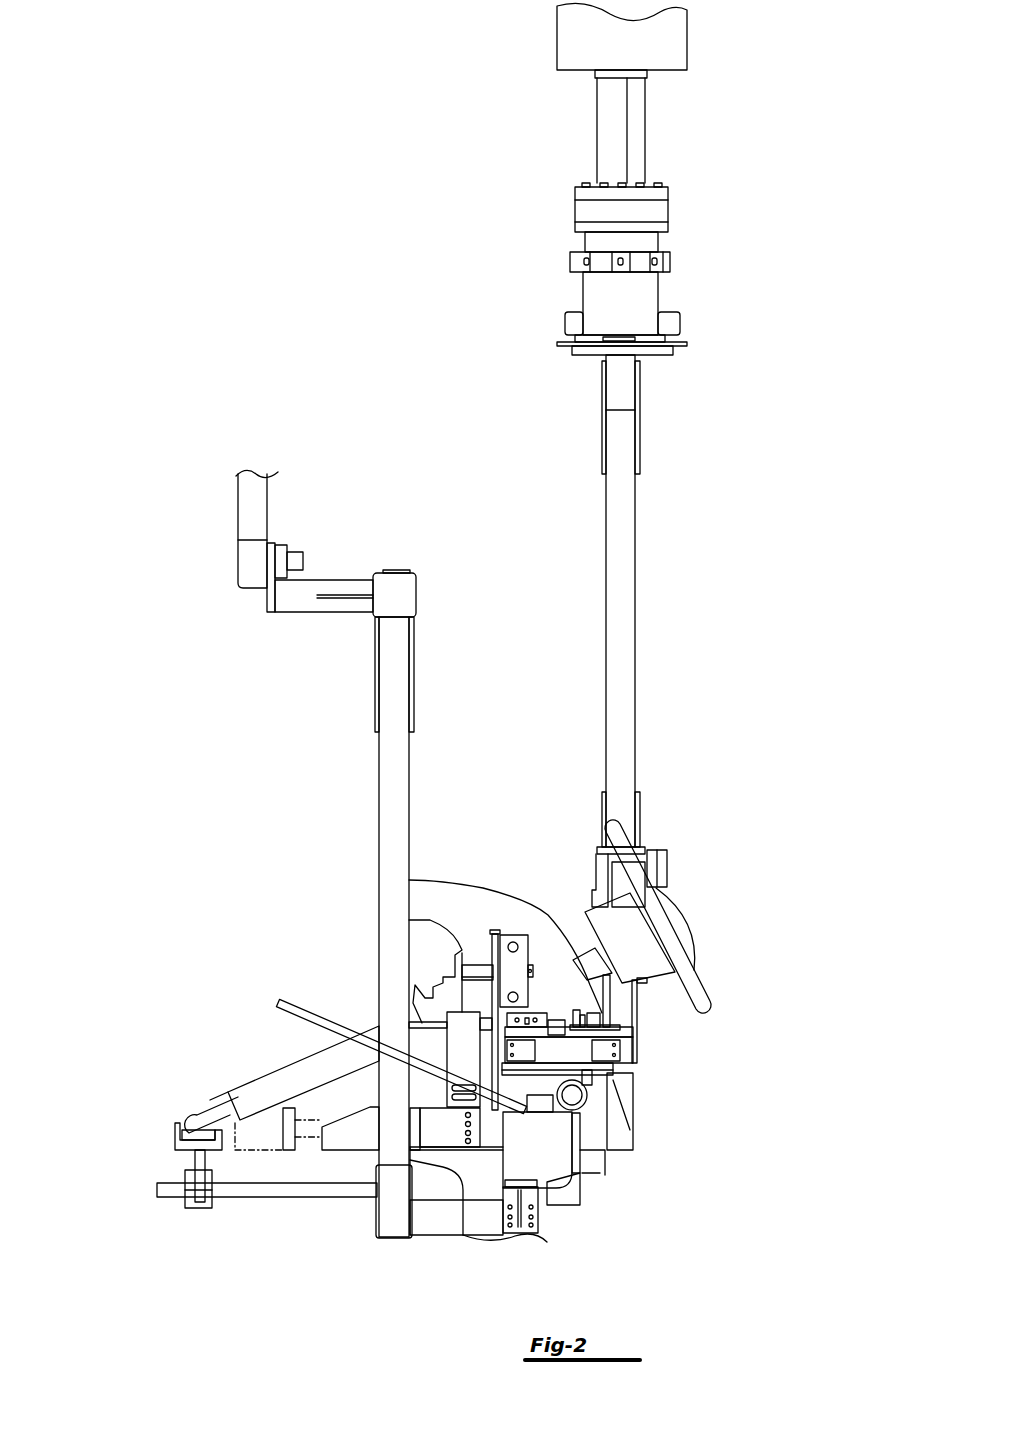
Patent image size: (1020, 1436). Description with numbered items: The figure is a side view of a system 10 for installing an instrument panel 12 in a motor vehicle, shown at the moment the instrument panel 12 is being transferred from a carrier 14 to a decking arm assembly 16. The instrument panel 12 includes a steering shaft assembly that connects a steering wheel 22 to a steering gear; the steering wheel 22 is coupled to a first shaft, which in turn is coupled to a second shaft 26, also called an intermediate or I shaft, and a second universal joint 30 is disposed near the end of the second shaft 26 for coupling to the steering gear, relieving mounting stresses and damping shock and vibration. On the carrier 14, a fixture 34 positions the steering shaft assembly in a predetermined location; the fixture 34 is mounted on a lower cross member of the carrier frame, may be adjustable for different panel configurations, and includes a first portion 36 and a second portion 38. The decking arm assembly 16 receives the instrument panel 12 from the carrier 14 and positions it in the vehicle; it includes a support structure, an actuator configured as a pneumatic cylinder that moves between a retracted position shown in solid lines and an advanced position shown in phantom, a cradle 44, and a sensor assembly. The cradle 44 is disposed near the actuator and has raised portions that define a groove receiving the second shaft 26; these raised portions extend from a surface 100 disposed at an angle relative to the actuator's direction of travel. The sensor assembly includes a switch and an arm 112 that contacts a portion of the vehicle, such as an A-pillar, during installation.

The system 10 is at (419, 812).
The instrument panel 12 is at (487, 893).
The carrier 14 is at (383, 772).
The decking arm assembly 16 is at (715, 252).
The steering wheel 22 is at (697, 990).
The second shaft 26 is at (262, 1082).
The second universal joint 30 is at (182, 1143).
The fixture 34 is at (235, 1202).
The first portion 36 is at (255, 1195).
The second portion 38 is at (195, 1160).
The cradle 44 is at (343, 1150).
The surface 100 is at (563, 1102).
The arm 112 is at (315, 1003).